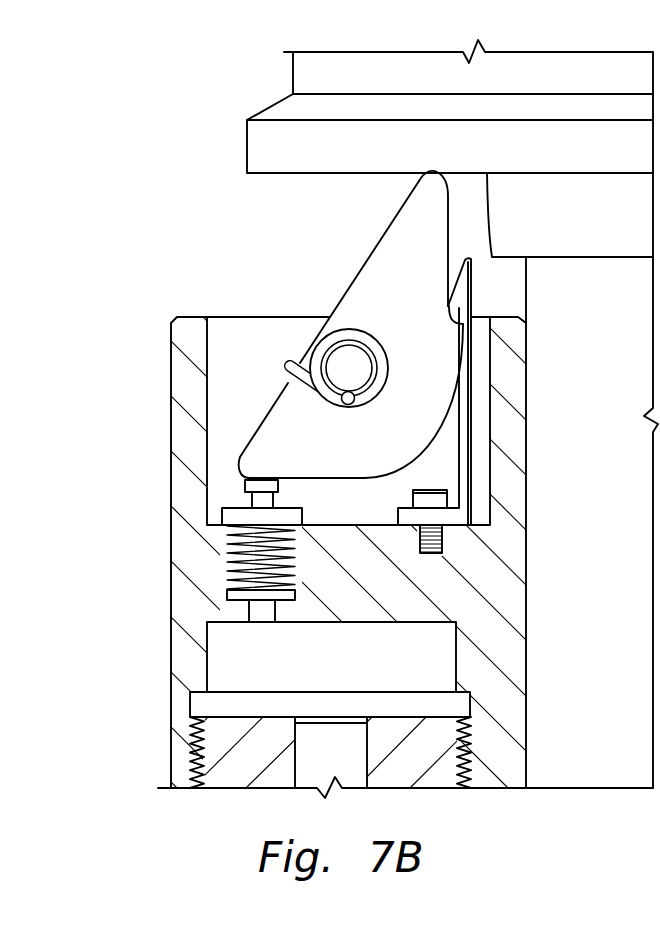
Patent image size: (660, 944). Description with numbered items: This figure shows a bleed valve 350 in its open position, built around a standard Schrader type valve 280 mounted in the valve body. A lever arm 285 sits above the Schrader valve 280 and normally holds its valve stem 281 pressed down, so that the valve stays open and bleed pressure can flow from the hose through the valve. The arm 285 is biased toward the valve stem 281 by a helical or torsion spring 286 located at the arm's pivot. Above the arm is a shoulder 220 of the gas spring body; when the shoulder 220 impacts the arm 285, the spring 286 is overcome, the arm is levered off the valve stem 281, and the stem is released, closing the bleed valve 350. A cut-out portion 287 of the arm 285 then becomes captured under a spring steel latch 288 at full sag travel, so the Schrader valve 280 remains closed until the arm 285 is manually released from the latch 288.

The shoulder 220 is at (582, 173).
The lever arm 285 is at (387, 232).
The torsion spring 286 is at (352, 330).
The cut-out portion 287 is at (464, 327).
The spring steel latch 288 is at (463, 291).
The valve stem 281 is at (243, 496).
The Schrader type valve 280 is at (257, 557).
The bleed valve 350 is at (171, 660).